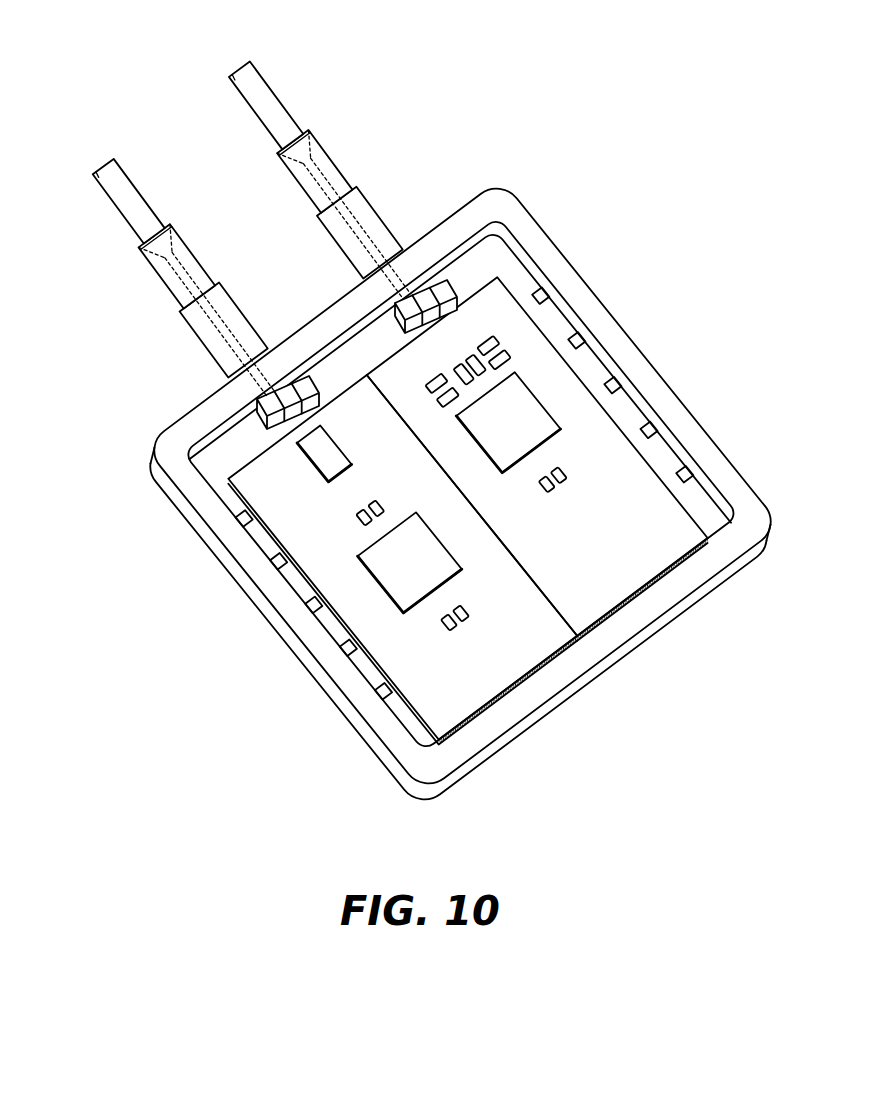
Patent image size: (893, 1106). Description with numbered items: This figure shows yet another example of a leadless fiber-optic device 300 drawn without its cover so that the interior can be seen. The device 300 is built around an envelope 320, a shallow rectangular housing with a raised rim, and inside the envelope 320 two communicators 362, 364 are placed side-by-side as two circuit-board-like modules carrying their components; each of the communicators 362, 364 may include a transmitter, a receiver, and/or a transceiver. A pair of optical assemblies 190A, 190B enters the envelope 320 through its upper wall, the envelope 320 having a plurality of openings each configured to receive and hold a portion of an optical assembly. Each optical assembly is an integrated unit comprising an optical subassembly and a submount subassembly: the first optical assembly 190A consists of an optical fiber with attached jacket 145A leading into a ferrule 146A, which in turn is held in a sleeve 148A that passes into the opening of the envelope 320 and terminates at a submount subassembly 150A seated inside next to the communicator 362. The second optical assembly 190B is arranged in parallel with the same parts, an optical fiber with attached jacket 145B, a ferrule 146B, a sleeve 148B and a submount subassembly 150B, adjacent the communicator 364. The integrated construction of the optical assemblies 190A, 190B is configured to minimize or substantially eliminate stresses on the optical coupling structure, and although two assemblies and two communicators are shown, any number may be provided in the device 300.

The FO device 300 is at (670, 34).
The envelope 320 is at (582, 660).
The communicator 362 is at (617, 463).
The communicator 364 is at (387, 637).
The optical assembly 190A is at (433, 75).
The optical assembly 190B is at (251, 261).
The optical fiber with attached jacket 145A is at (240, 83).
The optical fiber with attached jacket 145B is at (110, 165).
The ferrule 146A is at (323, 163).
The ferrule 146B is at (172, 270).
The sleeve 148A is at (378, 212).
The sleeve 148B is at (210, 345).
The submount subassembly 150A is at (440, 287).
The submount subassembly 150B is at (258, 404).